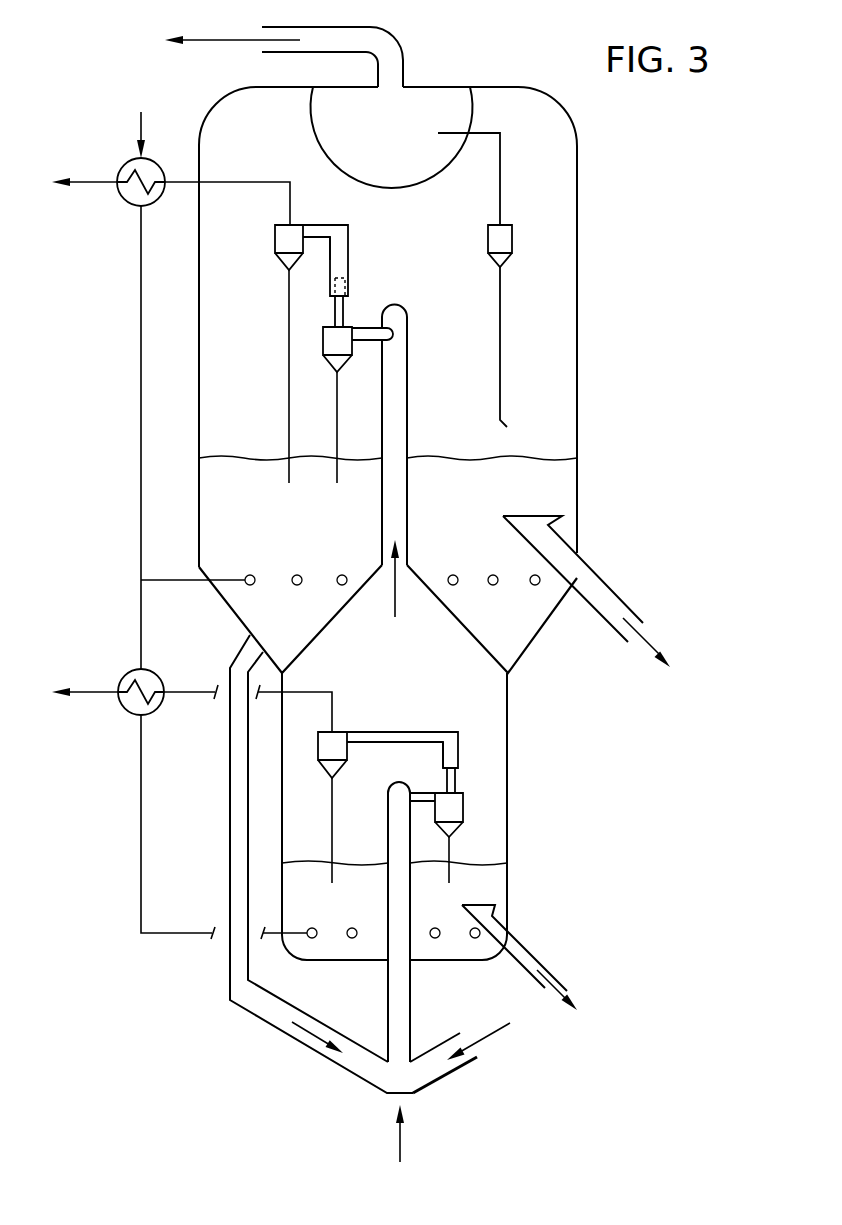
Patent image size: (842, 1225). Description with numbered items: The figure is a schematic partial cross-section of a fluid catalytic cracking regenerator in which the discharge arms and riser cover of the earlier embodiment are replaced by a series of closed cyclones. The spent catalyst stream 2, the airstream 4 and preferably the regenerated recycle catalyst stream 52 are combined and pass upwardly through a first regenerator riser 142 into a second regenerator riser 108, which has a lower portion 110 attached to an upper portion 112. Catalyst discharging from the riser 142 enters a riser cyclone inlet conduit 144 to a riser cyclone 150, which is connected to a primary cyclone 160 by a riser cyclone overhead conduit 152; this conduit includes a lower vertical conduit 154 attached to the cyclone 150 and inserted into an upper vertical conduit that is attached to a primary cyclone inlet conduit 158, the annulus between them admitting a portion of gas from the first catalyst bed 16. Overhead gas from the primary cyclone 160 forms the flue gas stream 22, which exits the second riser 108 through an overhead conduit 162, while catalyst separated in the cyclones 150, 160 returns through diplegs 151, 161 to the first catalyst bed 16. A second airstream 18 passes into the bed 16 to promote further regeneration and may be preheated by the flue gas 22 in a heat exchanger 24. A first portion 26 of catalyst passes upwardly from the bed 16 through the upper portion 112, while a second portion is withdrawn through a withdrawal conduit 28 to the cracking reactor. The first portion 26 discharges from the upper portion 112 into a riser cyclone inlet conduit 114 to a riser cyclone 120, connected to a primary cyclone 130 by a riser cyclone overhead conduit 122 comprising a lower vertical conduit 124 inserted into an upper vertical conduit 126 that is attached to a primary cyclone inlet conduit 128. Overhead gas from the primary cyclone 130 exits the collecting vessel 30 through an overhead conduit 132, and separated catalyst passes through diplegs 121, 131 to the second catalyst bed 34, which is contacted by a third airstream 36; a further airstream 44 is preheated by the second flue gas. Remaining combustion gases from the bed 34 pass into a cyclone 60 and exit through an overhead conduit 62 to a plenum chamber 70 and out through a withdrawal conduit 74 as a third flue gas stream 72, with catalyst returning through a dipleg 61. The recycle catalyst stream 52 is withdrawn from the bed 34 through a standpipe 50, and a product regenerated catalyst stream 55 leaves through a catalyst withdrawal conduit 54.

The spent catalyst stream 2 is at (492, 1034).
The airstream 4 is at (403, 1142).
The first catalyst bed 16 is at (370, 903).
The second airstream 18 is at (141, 860).
The first flue gas stream 22 is at (200, 693).
The heat exchanger 24 is at (120, 675).
The first portion of catalyst 26 is at (377, 586).
The withdrawal conduit 28 is at (530, 947).
The collecting vessel 30 is at (577, 288).
The second catalyst bed 34 is at (281, 549).
The third airstream 36 is at (193, 581).
The airstream 44 is at (140, 128).
The standpipe 50 is at (272, 1025).
The regenerated recycle catalyst stream 52 is at (320, 1052).
The catalyst withdrawal conduit 54 is at (592, 567).
The product regenerated catalyst stream 55 is at (648, 643).
The cyclone 60 is at (488, 232).
The dipleg 61 is at (500, 308).
The overhead conduit 62 is at (500, 184).
The plenum chamber 70 is at (381, 150).
The third flue gas stream 72 is at (240, 38).
The withdrawal conduit 74 is at (310, 27).
The second regenerator riser 108 is at (508, 775).
The lower portion 110 is at (508, 815).
The upper portion 112 is at (408, 405).
The riser cyclone inlet conduit 114 is at (362, 340).
The riser cyclone 120 is at (323, 345).
The dipleg 121 is at (337, 415).
The riser cyclone overhead conduit 122 is at (349, 270).
The lower vertical conduit 124 is at (343, 312).
The upper vertical conduit 126 is at (349, 240).
The primary cyclone inlet conduit 128 is at (330, 225).
The primary cyclone 130 is at (275, 238).
The dipleg 131 is at (289, 408).
The overhead conduit 132 is at (262, 182).
The first regenerator riser 142 is at (413, 1007).
The riser cyclone inlet conduit 144 is at (424, 793).
The riser cyclone 150 is at (460, 807).
The dipleg 151 is at (450, 870).
The riser cyclone overhead conduit 152 is at (458, 740).
The lower vertical conduit 154 is at (456, 782).
The primary cyclone inlet conduit 158 is at (402, 728).
The primary cyclone 160 is at (333, 740).
The dipleg 161 is at (332, 820).
The overhead conduit 162 is at (298, 692).